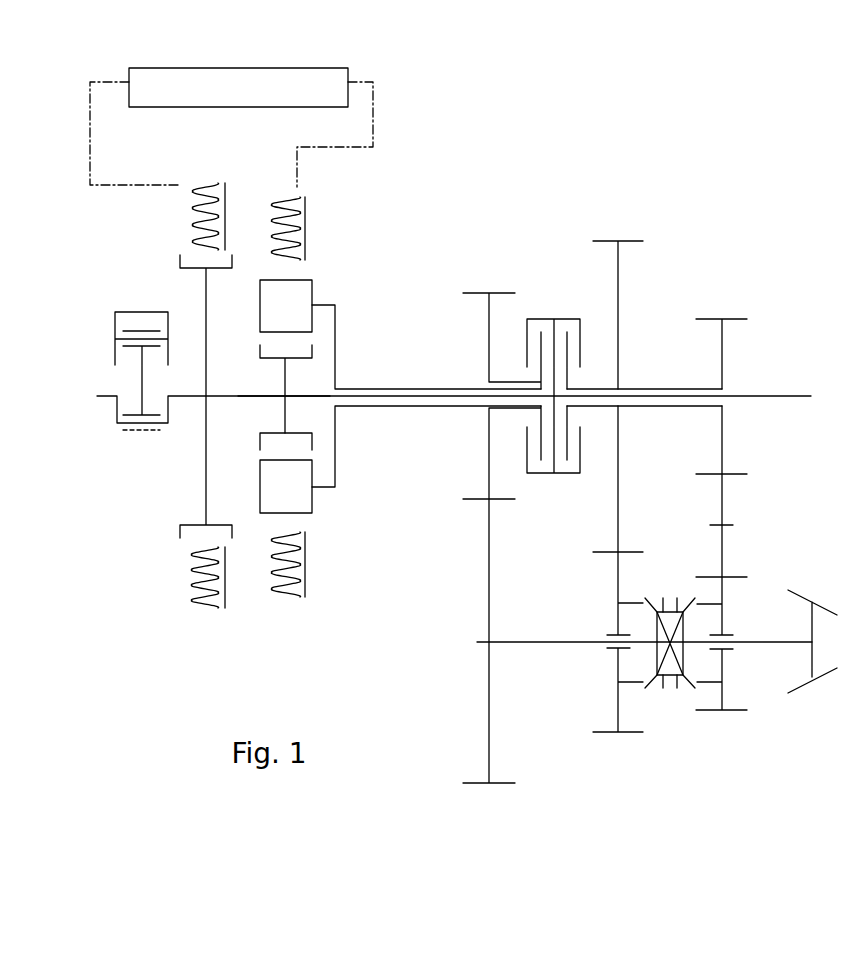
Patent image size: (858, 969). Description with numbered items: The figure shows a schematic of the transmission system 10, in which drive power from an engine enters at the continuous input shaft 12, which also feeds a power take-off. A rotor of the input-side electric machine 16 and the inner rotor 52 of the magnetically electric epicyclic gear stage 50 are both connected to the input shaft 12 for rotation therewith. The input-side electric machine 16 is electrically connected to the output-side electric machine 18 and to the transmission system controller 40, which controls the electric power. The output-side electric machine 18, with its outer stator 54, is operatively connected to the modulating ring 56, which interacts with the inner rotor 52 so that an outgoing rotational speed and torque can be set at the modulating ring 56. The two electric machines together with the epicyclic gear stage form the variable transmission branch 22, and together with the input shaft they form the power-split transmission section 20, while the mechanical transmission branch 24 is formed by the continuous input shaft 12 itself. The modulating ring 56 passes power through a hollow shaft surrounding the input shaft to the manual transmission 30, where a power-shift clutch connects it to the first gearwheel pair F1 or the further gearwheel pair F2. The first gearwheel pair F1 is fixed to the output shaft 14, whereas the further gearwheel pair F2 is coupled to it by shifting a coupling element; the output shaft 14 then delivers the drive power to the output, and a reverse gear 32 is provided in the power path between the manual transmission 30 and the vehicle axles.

The transmission system 10 is at (682, 120).
The input shaft 12 is at (187, 397).
The output shaft 14 is at (750, 642).
The input-side electric machine 16 is at (203, 216).
The output-side electric machine 18 is at (307, 213).
The power-split transmission section 20 is at (327, 615).
The variable transmission branch 22 is at (153, 493).
The mechanical transmission branch 24 is at (242, 396).
The manual transmission 30 is at (543, 201).
The reverse gear 32 is at (732, 318).
The transmission system controller 40 is at (231, 127).
The magnetically electric epicyclic gear stage 50 is at (340, 281).
The inner rotor 52 is at (312, 438).
The outer stator 54 is at (307, 560).
The modulating ring 56 is at (312, 497).
The first gearwheel pair F1 is at (502, 516).
The further gearwheel pair F2 is at (618, 466).